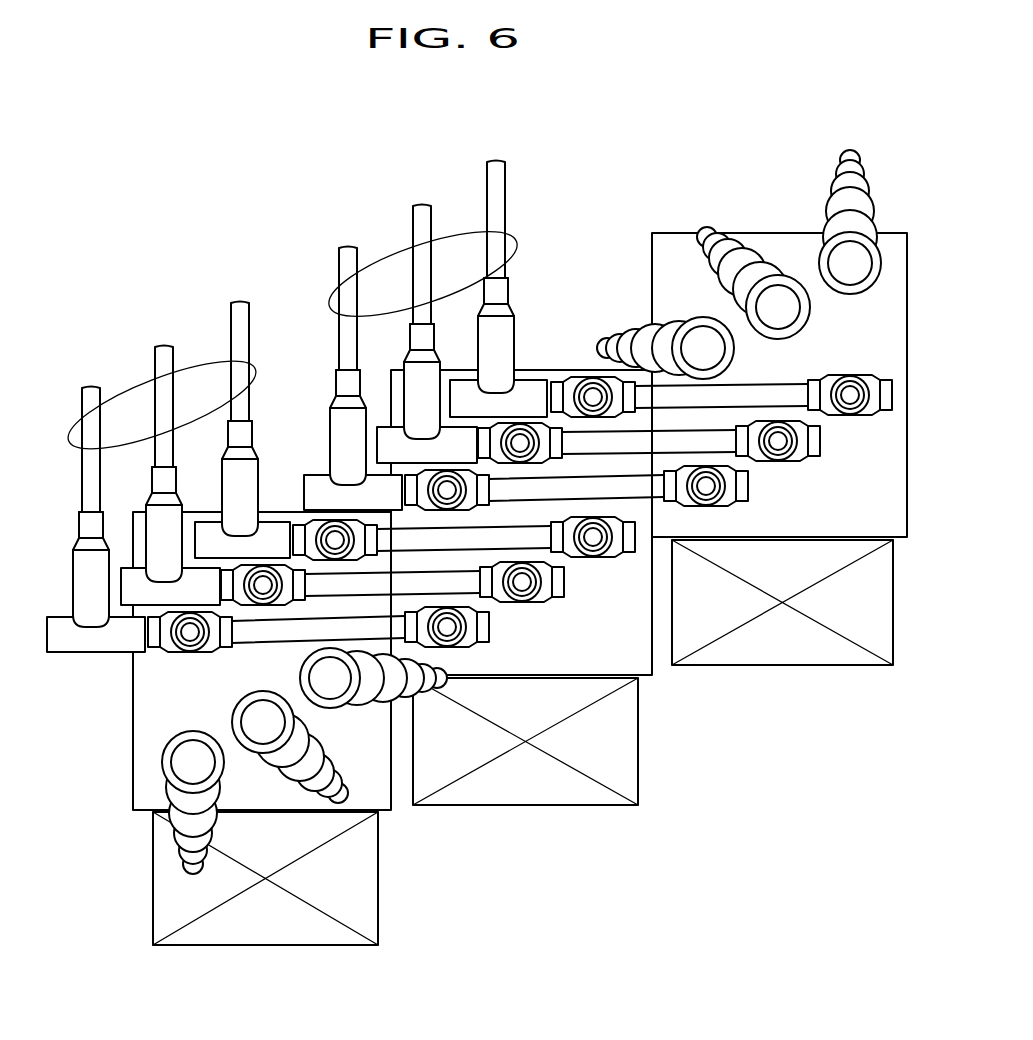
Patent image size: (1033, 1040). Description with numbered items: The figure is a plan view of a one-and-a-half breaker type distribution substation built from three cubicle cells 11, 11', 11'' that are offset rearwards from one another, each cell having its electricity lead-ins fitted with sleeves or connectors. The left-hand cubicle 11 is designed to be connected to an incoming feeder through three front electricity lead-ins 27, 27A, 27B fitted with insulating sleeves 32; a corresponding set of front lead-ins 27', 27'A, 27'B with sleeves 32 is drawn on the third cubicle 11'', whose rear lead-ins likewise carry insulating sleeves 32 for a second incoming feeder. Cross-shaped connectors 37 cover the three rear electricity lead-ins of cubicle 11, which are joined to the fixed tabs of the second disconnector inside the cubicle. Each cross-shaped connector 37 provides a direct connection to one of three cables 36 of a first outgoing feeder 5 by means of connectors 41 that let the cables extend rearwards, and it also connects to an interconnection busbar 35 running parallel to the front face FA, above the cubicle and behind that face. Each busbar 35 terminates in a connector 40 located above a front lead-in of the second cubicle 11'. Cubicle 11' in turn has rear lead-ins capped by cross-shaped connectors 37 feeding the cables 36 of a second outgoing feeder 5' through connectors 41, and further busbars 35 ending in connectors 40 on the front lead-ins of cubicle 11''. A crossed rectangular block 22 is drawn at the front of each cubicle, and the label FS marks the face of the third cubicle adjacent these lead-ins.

The first outgoing feeder 5 is at (162, 393).
The second outgoing feeder 5' is at (423, 262).
The cubicle 11 is at (300, 692).
The cubicle 11' is at (566, 552).
The cubicle 11'' is at (764, 341).
The connector block 22 is at (367, 902).
The front electricity lead-in 27 is at (260, 747).
The front electricity lead-in 27A is at (163, 762).
The front electricity lead-in 27B is at (307, 670).
The plug contact ring 27' is at (814, 307).
The plug contact 27'A is at (648, 323).
The plug contact 27'B is at (761, 243).
The insulating sleeve 32 is at (173, 857).
The interconnection busbar 35 is at (467, 632).
The cable 36 is at (178, 368).
The cross-shaped connector 37 is at (264, 585).
The connector 40 is at (737, 487).
The connector 41 is at (63, 630).
The front side FS is at (667, 260).
The front face FA is at (237, 952).